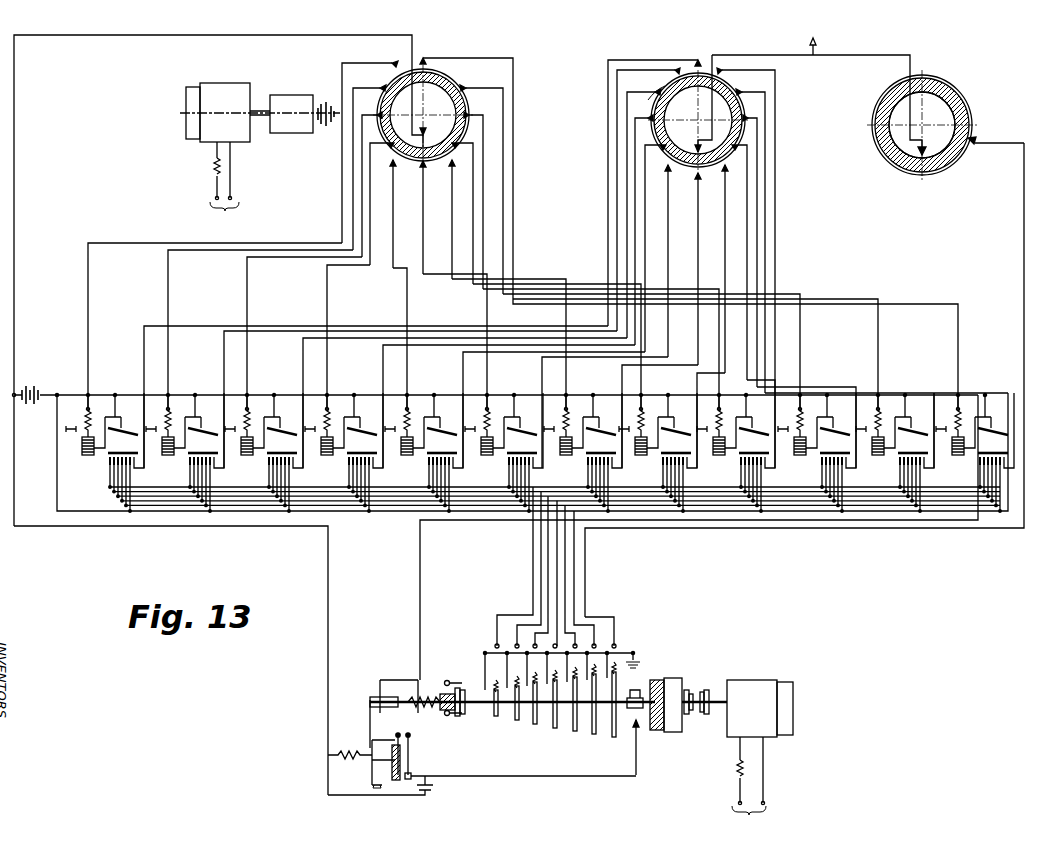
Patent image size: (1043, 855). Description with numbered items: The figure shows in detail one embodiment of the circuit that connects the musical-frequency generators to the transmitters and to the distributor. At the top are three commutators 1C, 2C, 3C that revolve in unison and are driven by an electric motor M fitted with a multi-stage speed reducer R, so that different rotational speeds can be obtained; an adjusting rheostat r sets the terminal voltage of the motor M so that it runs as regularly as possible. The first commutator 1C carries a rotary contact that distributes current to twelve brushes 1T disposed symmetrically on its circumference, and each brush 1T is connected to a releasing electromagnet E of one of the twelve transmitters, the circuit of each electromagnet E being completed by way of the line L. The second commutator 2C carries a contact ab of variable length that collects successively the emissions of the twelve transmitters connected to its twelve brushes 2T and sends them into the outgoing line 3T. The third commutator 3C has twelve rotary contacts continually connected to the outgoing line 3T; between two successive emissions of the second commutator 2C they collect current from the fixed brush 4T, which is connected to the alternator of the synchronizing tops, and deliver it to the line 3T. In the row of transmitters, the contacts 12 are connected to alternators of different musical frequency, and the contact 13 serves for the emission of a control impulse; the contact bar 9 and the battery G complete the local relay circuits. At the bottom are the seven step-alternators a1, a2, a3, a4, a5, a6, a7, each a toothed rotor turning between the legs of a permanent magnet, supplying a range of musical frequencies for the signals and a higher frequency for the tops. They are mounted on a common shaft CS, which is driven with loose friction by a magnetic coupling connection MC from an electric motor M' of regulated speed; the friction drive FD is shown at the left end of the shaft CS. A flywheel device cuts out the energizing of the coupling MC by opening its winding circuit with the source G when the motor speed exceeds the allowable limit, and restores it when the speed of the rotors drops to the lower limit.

The electric motor M is at (260, 140).
The multi-stage speed reducer R is at (292, 104).
The adjusting rheostat r is at (213, 157).
The brushes 1T is at (442, 178).
The first commutator 1C is at (470, 86).
The contact ab is at (665, 86).
The brushes 2T is at (709, 224).
The second commutator 2C is at (748, 101).
The outgoing line 3T is at (844, 109).
The third commutator 3C is at (912, 52).
The fixed brush 4T is at (1024, 208).
The source G is at (35, 385).
The line L is at (137, 440).
The releasing electromagnet E is at (111, 452).
The contact bar 9 is at (111, 452).
The contacts 12 is at (111, 452).
The contact 13 is at (111, 452).
The friction drive FD is at (417, 703).
The step-alternator a1 is at (492, 708).
The step-alternator a2 is at (514, 710).
The step-alternator a3 is at (533, 712).
The step-alternator a4 is at (555, 714).
The step-alternator a5 is at (577, 716).
The step-alternator a6 is at (596, 662).
The step-alternator a7 is at (616, 666).
The common shaft CS is at (636, 722).
The magnetic coupling connection MC is at (682, 684).
The electric motor M' is at (760, 736).